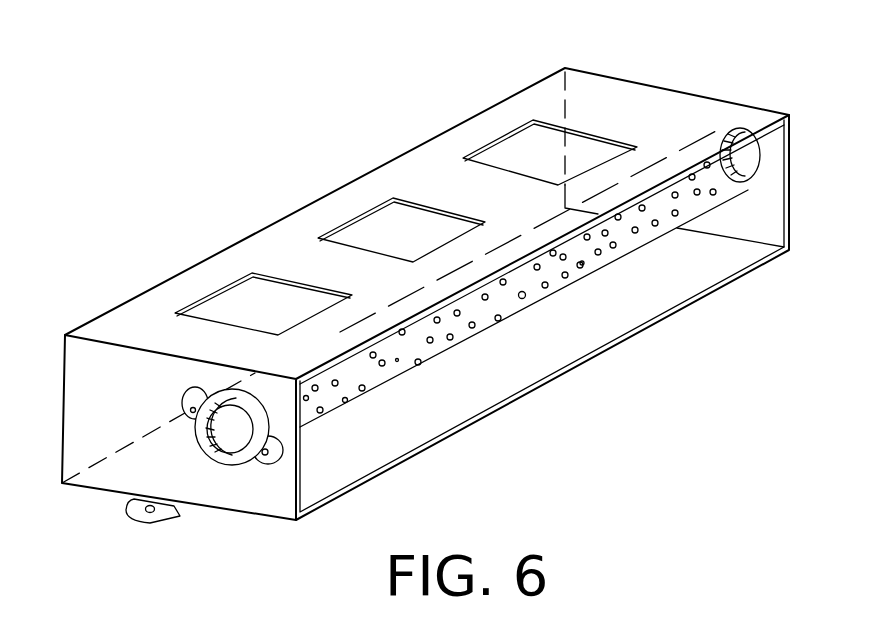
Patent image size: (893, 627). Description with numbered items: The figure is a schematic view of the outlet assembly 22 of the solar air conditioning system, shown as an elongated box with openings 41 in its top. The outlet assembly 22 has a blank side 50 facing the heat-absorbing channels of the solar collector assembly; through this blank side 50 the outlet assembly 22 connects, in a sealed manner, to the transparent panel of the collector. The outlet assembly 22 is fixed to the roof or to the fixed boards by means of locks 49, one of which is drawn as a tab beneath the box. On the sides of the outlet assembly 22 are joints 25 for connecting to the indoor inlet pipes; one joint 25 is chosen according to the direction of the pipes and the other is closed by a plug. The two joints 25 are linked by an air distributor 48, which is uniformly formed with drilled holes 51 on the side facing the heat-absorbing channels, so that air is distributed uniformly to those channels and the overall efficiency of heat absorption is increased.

The outlet assembly 22 is at (108, 312).
The openings 41 is at (392, 217).
The air distributor 48 is at (467, 343).
The drilled holes 51 is at (522, 299).
The blank side 50 is at (663, 272).
The joints 25 is at (223, 457).
The locks 49 is at (173, 520).